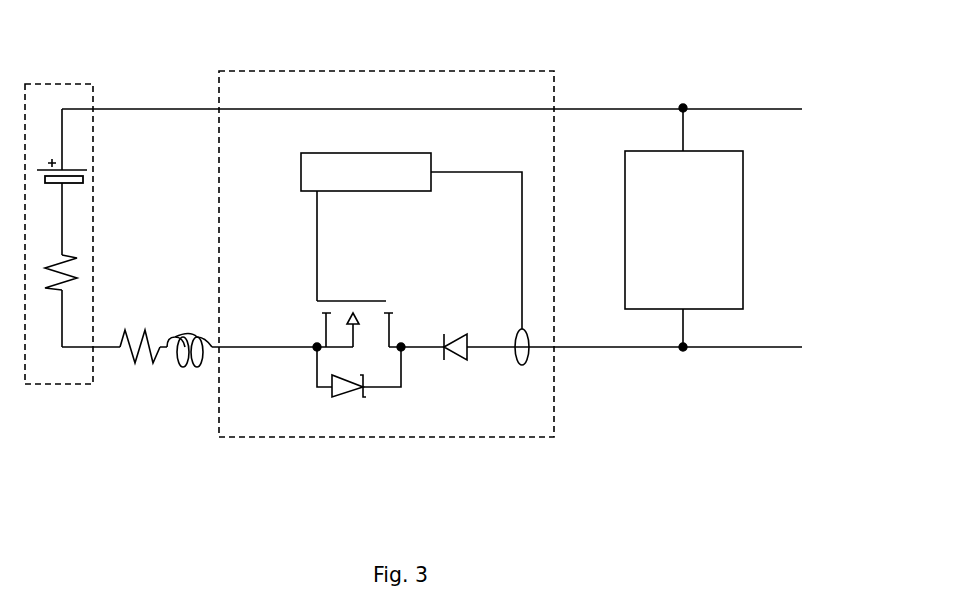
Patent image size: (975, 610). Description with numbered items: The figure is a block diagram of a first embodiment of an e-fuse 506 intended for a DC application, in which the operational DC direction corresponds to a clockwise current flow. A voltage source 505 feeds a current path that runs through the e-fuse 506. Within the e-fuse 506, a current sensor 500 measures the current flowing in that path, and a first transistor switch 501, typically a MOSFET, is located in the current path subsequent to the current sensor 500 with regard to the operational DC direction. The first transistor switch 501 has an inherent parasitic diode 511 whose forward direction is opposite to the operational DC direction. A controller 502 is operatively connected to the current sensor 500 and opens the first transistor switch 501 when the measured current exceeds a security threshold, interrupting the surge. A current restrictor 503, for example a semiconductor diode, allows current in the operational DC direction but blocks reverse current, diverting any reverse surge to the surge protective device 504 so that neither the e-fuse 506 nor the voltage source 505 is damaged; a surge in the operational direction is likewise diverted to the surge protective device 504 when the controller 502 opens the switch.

The current sensor 500 is at (522, 365).
The first transistor switch 501 is at (379, 301).
The controller 502 is at (447, 143).
The current restrictor 503 is at (449, 336).
The surge protective device 504 is at (625, 307).
The voltage source 505 is at (25, 385).
The e-fuse 506 is at (514, 71).
The parasitic diode 511 is at (331, 398).